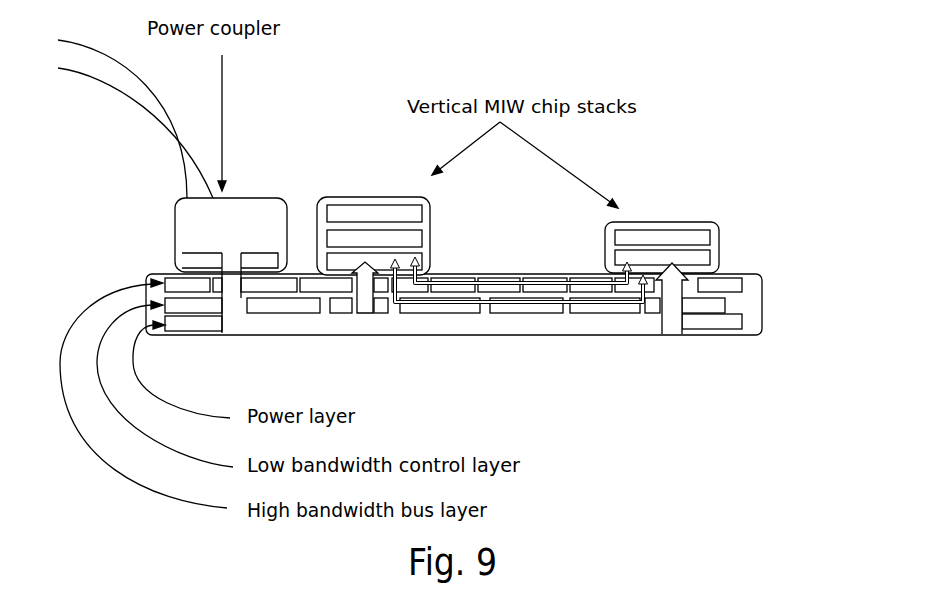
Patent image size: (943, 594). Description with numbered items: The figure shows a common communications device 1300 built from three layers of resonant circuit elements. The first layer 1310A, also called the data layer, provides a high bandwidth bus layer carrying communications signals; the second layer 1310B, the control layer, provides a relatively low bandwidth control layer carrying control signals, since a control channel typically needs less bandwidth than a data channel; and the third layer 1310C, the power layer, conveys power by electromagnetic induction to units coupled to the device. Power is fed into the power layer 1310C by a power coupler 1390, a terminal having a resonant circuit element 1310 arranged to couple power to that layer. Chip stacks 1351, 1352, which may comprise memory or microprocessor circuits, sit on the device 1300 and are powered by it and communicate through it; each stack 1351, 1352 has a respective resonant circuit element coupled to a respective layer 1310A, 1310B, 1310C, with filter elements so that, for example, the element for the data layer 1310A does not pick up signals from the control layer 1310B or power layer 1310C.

The common communications device 1300 is at (453, 187).
The resonant circuit element 1310 is at (187, 259).
The first layer 1310A is at (752, 280).
The second layer 1310B is at (735, 299).
The third layer 1310C is at (754, 318).
The chip stack 1351 is at (333, 196).
The chip stack 1352 is at (650, 221).
The power coupler 1390 is at (184, 220).